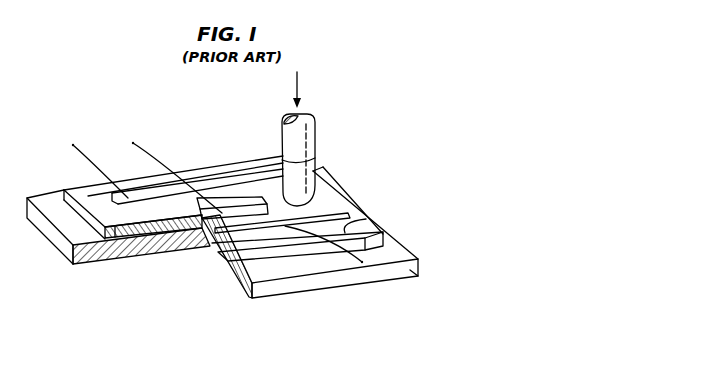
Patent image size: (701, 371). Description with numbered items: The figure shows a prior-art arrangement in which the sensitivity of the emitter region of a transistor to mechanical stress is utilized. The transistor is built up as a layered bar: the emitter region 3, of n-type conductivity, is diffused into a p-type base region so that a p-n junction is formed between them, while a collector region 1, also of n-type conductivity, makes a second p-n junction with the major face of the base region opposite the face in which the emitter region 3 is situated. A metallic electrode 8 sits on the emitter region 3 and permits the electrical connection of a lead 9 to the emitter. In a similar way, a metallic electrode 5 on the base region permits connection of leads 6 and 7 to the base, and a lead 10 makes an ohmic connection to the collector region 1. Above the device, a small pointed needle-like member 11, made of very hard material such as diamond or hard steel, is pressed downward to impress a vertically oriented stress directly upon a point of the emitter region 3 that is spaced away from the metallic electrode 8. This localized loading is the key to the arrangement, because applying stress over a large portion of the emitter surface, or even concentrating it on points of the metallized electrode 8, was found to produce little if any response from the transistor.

The collector region 1 is at (145, 257).
The emitter region 3 is at (147, 210).
The metallic electrode 5 is at (352, 216).
The lead 6 is at (93, 160).
The lead 7 is at (372, 237).
The metallic electrode 8 is at (237, 203).
The lead 9 is at (157, 163).
The lead 10 is at (393, 318).
The pointed needle-like member 11 is at (315, 150).